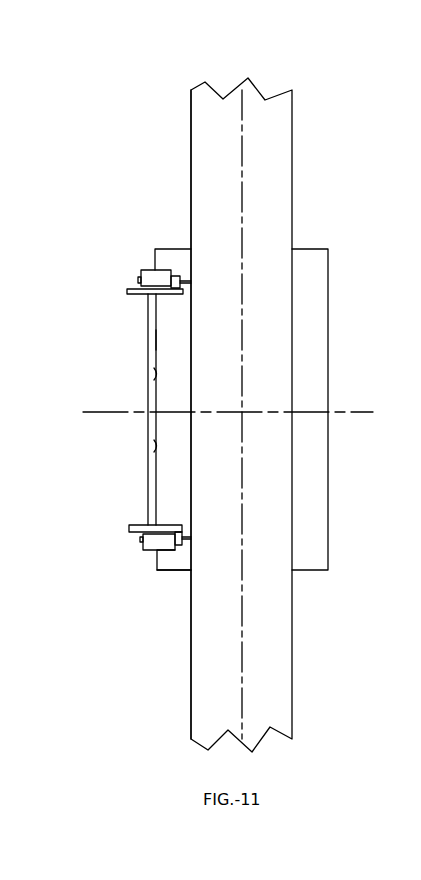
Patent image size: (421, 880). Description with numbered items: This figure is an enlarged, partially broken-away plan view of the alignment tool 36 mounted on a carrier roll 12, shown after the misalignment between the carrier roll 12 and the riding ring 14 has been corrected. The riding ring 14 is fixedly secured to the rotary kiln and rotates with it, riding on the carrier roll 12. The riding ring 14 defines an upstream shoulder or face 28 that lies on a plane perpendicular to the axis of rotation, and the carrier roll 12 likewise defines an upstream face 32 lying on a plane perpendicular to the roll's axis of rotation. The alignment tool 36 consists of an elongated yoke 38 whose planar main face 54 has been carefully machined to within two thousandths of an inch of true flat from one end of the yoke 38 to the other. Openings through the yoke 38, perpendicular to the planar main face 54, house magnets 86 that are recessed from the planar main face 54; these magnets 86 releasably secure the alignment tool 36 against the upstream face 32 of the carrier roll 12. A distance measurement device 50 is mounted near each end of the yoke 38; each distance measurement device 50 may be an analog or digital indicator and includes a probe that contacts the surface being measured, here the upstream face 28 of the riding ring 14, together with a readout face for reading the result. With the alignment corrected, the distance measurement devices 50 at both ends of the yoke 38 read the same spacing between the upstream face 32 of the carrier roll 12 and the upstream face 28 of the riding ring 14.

The carrier roll 12 is at (318, 312).
The riding ring 14 is at (207, 100).
The upstream shoulder or face 28 is at (190, 205).
The upstream face 32 is at (157, 562).
The alignment tool 36 is at (147, 250).
The elongated yoke 38 is at (147, 478).
The distance measurement device 50 is at (140, 270).
The planar main face 54 is at (156, 350).
The magnet 86 is at (153, 375).